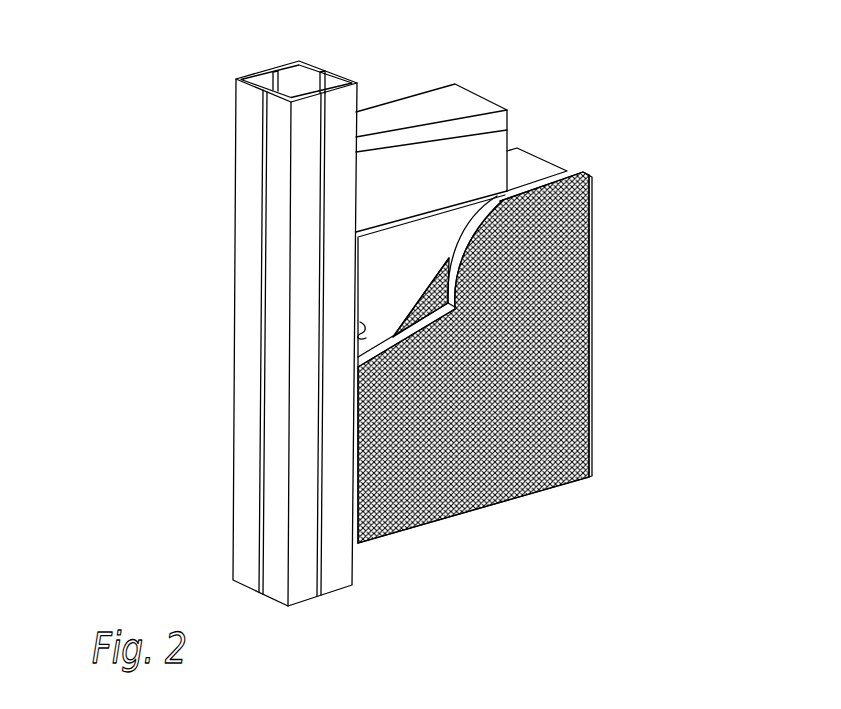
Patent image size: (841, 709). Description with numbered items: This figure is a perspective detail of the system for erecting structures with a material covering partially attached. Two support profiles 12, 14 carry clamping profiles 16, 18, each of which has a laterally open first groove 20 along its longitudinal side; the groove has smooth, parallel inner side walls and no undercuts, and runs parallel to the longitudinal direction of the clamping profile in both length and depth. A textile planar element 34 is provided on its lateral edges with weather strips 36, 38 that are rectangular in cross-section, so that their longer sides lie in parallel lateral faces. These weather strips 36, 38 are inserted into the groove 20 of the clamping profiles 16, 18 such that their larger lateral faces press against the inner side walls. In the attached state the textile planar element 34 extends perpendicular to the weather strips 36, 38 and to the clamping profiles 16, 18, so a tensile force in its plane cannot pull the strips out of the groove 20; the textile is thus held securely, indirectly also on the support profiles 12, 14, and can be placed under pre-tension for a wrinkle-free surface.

The support profile 12 is at (236, 269).
The support profile 14 is at (496, 105).
The clamping profile 16 is at (358, 333).
The clamping profile 18 is at (533, 170).
The first groove 20 is at (403, 232).
The textile planar element 34 is at (575, 317).
The weather strip 36 is at (452, 272).
The weather strip 38 is at (422, 322).